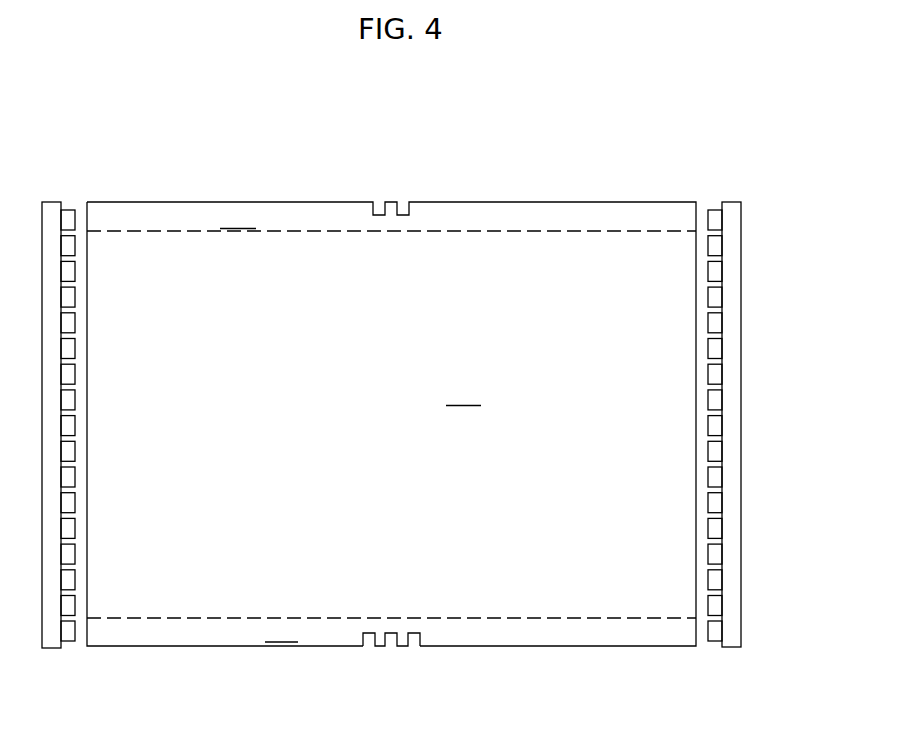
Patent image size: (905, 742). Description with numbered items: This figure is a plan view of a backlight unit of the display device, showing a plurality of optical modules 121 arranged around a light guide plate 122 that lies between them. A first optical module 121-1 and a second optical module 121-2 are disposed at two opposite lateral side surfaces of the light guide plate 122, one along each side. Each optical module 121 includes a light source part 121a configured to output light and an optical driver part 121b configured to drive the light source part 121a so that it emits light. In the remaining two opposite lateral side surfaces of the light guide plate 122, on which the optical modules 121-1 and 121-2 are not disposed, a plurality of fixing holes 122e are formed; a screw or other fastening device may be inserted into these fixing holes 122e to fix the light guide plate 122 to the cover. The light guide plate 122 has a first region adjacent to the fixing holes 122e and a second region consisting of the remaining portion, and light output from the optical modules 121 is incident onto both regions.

The optical module 121 is at (740, 133).
The first optical module 121-1 is at (53, 210).
The second optical module 121-2 is at (733, 210).
The light source part 121a is at (713, 640).
The optical driver part 121b is at (733, 647).
The light guide plate 122 is at (588, 210).
The fixing hole 122e is at (416, 647).